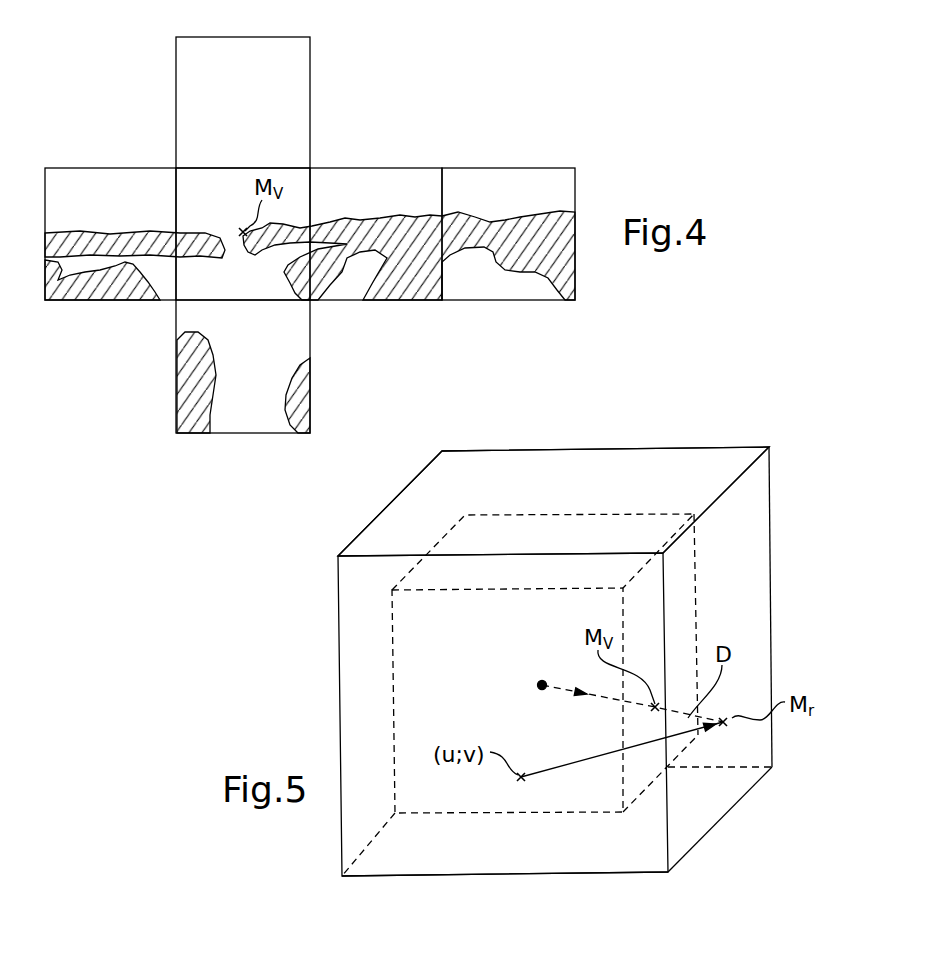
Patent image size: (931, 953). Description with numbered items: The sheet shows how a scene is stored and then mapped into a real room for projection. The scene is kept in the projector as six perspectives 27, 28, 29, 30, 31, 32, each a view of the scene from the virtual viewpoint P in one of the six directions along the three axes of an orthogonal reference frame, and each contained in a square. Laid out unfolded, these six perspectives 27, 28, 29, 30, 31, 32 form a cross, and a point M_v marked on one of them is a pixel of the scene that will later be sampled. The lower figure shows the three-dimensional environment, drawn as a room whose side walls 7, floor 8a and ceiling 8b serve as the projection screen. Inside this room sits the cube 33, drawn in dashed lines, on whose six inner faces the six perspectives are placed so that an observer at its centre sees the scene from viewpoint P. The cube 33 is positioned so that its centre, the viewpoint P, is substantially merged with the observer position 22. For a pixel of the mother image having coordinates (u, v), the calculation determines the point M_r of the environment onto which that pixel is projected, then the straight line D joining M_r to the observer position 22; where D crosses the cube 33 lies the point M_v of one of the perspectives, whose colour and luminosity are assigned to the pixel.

In FIG. 4, the perspective 27 is at (310, 68).
In FIG. 4, the perspective 28 is at (66, 178).
In FIG. 4, the perspective 29 is at (206, 178).
In FIG. 4, the perspective 30 is at (410, 175).
In FIG. 4, the perspective 31 is at (539, 175).
In FIG. 4, the perspective 32 is at (228, 438).
In FIG. 5, the side walls 7 is at (760, 523).
In FIG. 5, the floor 8a is at (556, 855).
In FIG. 5, the ceiling 8b is at (698, 450).
In FIG. 5, the cube 33 is at (698, 606).
In FIG. 5, the observer position 22 is at (538, 685).